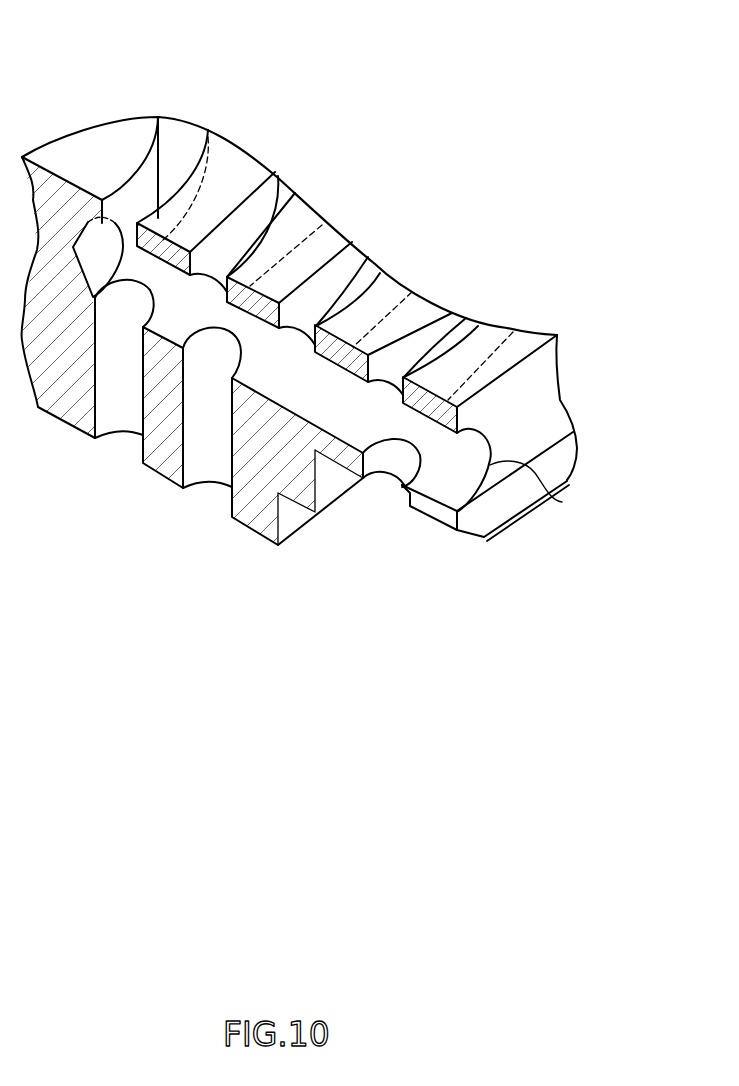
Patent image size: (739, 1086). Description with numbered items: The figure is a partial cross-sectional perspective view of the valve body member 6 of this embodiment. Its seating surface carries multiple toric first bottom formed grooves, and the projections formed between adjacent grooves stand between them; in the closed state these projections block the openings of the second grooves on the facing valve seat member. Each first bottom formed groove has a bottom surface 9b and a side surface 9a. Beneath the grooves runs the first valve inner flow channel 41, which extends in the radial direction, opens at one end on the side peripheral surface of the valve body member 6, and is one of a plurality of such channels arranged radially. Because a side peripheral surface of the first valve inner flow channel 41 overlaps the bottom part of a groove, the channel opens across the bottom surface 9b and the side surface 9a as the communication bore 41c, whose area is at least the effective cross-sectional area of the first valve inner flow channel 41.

The valve body member 6 is at (570, 398).
The side surface of the first bottom formed groove 9a is at (138, 194).
The bottom surface of the first bottom formed groove 9b is at (173, 152).
The first valve inner flow channel 41 is at (562, 502).
The communication bore 41c is at (130, 238).